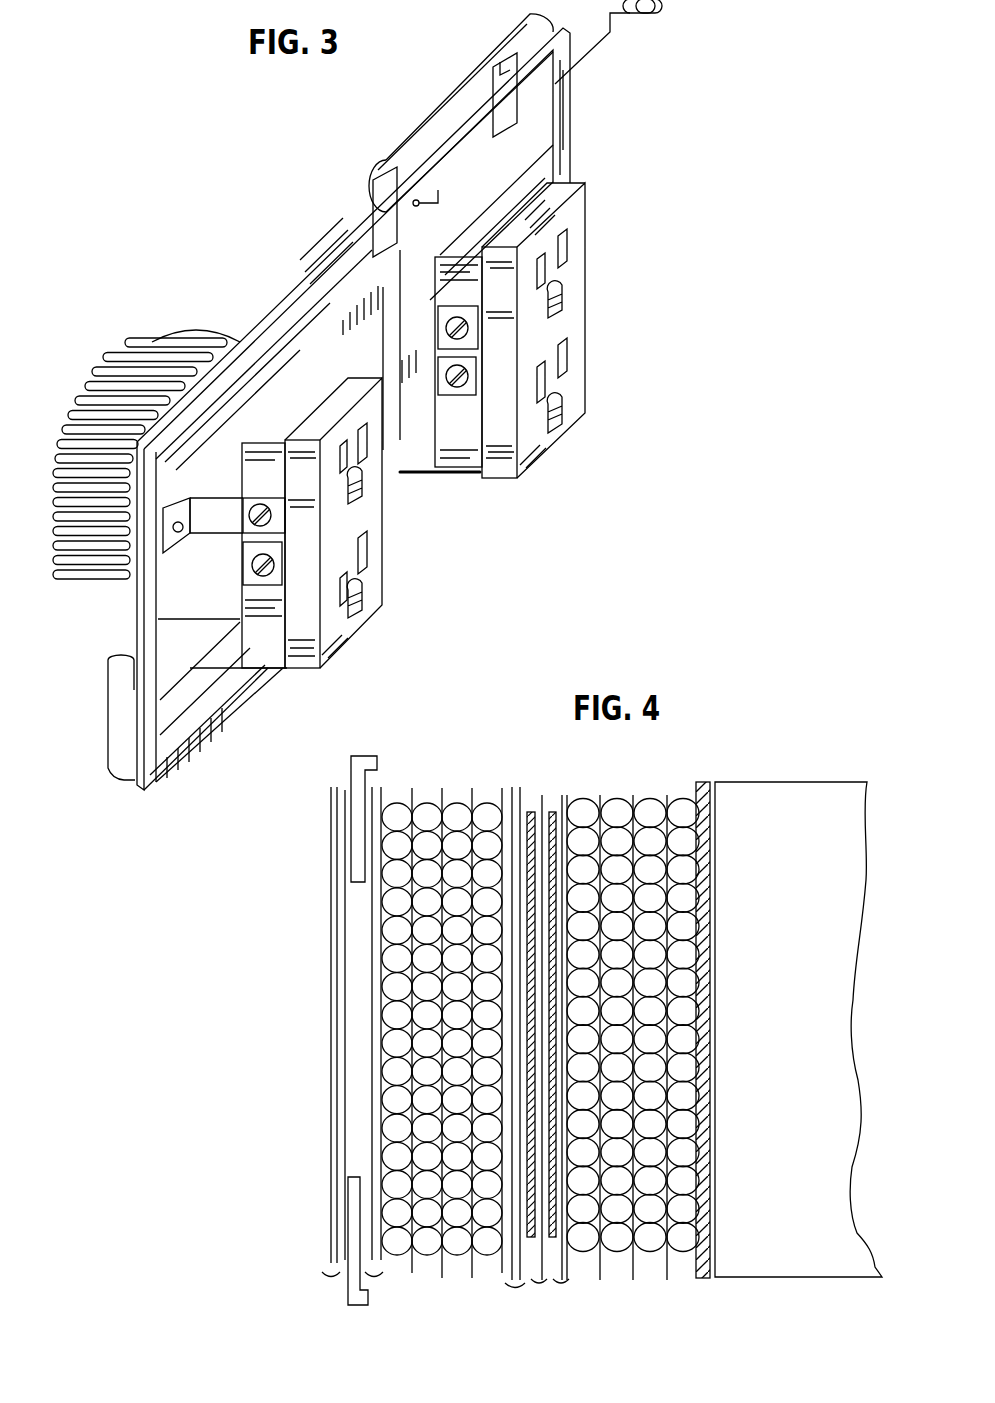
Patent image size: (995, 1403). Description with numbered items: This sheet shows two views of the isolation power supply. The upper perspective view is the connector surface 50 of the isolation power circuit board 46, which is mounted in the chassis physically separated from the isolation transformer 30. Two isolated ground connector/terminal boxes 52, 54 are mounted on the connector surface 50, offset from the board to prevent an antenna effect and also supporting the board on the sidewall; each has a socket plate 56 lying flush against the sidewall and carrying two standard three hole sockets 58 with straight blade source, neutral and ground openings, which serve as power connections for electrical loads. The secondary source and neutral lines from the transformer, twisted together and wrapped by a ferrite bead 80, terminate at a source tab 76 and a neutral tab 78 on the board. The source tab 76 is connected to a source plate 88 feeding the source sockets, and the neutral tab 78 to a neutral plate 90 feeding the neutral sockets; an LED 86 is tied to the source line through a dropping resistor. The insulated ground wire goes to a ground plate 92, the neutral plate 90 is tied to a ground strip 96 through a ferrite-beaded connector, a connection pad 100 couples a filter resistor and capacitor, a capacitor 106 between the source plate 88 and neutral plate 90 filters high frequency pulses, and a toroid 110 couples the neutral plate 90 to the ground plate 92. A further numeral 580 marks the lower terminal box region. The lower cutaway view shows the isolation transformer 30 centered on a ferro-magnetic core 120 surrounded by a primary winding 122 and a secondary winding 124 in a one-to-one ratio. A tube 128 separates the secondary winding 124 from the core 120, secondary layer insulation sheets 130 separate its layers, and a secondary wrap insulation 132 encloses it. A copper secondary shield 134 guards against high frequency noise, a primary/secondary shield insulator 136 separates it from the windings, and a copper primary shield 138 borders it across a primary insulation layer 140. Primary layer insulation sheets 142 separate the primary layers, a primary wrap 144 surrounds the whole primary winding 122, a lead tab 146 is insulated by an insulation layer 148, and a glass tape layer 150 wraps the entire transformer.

In FIG. 4, the isolation transformer 30 is at (697, 762).
In FIG. 3, the isolation power circuit board 46 is at (332, 138).
In FIG. 3, the connector surface 50 is at (168, 757).
In FIG. 3, the isolated ground connector/terminal box 52 is at (277, 656).
In FIG. 3, the isolated ground connector/terminal box 54 is at (470, 464).
In FIG. 3, the socket plate 56 is at (532, 443).
In FIG. 3, the three hole socket 58 is at (557, 403).
In FIG. 3, the source tab 76 is at (506, 66).
In FIG. 3, the neutral tab 78 is at (379, 218).
In FIG. 3, the ferrite bead 80 is at (120, 778).
In FIG. 3, the LED 86 is at (645, 16).
In FIG. 3, the source plate 88 is at (543, 151).
In FIG. 3, the neutral plate 90 is at (270, 354).
In FIG. 3, the ground plate 92 is at (346, 350).
In FIG. 3, the ground strip 96 is at (203, 697).
In FIG. 3, the connection pad 100 is at (416, 412).
In FIG. 3, the capacitor 106 is at (437, 107).
In FIG. 3, the toroid 110 is at (100, 370).
In FIG. 4, the ferro-magnetic core 120 is at (810, 800).
In FIG. 4, the primary winding 122 is at (422, 1268).
In FIG. 4, the secondary winding 124 is at (677, 1266).
In FIG. 4, the tube 128 is at (706, 1292).
In FIG. 4, the secondary layer insulation sheet 130 is at (628, 1290).
In FIG. 4, the secondary wrap insulation 132 is at (569, 1294).
In FIG. 4, the secondary shield 134 is at (559, 793).
In FIG. 4, the primary/secondary shield insulator 136 is at (543, 1292).
In FIG. 4, the primary shield 138 is at (536, 793).
In FIG. 4, the primary insulation layer 140 is at (513, 1292).
In FIG. 4, the primary layer insulation sheet 142 is at (470, 1292).
In FIG. 4, the primary wrap 144 is at (375, 1286).
In FIG. 4, the lead tab 146 is at (359, 1311).
In FIG. 4, the insulation layer 148 is at (337, 1282).
In FIG. 4, the glass tape layer 150 is at (323, 1286).
In FIG. 3, the terminal block housing 580 is at (367, 552).